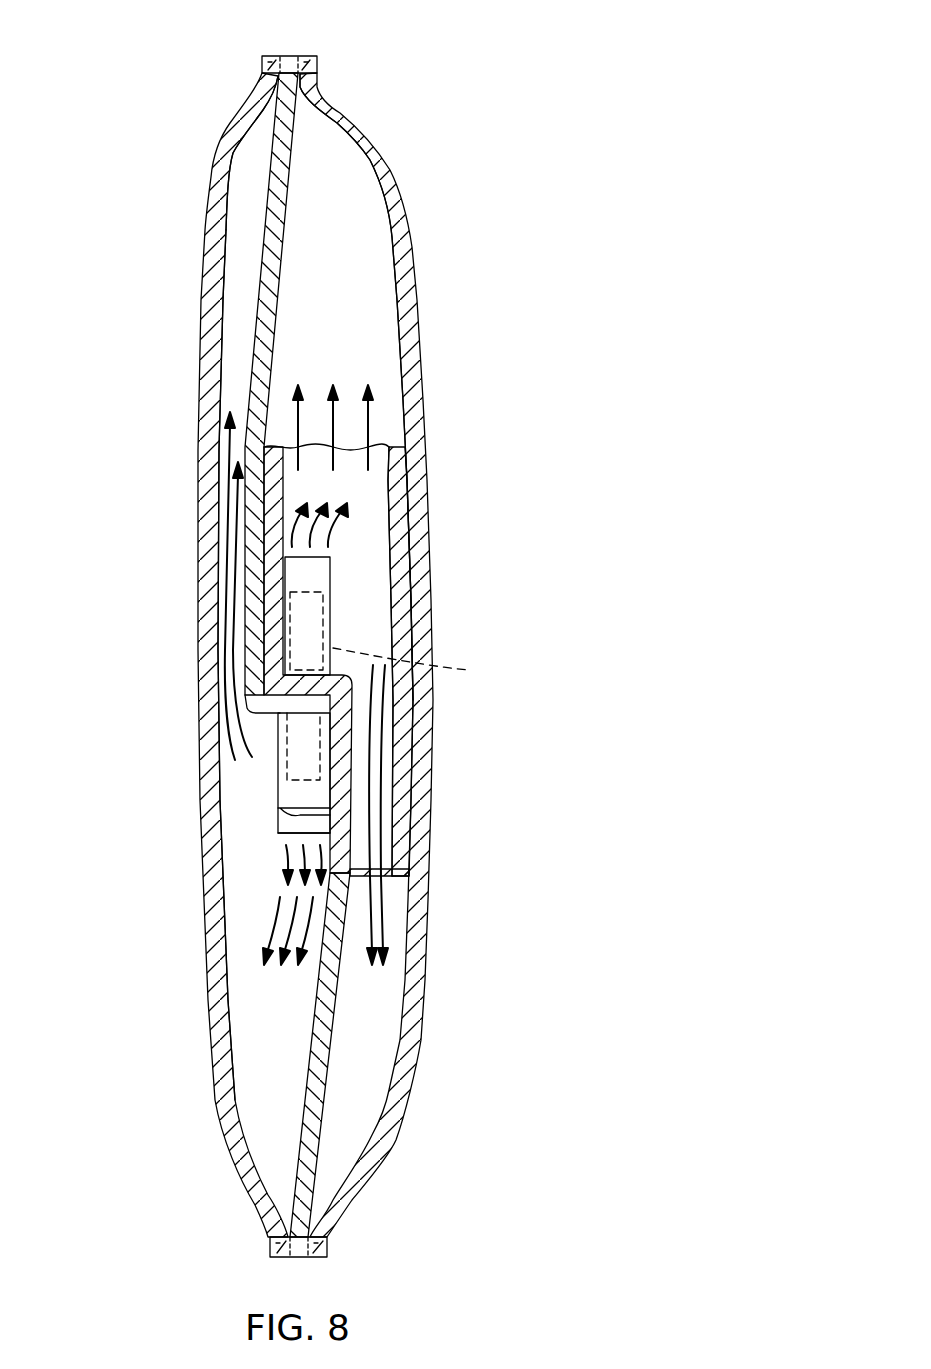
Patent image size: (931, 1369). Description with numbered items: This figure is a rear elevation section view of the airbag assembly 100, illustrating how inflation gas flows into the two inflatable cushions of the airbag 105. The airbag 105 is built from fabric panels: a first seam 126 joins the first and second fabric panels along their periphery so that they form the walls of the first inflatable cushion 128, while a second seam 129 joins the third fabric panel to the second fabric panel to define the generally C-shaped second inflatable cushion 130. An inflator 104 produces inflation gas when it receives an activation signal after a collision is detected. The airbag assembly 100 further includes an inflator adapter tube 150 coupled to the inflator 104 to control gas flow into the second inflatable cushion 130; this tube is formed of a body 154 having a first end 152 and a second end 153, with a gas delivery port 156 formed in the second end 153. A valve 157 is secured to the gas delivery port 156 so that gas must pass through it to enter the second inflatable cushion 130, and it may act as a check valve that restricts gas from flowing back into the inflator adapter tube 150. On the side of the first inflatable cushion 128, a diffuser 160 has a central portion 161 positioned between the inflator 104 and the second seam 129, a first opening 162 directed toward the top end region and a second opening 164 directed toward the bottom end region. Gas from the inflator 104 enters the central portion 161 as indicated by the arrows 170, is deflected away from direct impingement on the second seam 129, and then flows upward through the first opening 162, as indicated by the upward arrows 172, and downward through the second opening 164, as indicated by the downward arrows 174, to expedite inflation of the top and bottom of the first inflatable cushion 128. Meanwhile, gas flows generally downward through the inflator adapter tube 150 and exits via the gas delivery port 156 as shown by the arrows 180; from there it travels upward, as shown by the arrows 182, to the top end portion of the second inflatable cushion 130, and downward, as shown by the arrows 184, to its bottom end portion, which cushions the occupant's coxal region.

The airbag assembly 100 is at (534, 50).
The airbag 105 is at (170, 112).
The first seam 126 is at (318, 61).
The second seam 129 is at (262, 62).
The first inflatable cushion 128 is at (353, 190).
The second inflatable cushion 130 is at (237, 193).
The arrows 182 is at (233, 448).
The outlet flow arrows 172 is at (373, 405).
The first opening 162 is at (380, 443).
The arrows 170 is at (330, 525).
The central portion 161 is at (378, 560).
The diffuser 160 is at (432, 587).
The first end 152 is at (310, 578).
The inflator adapter tube 150 is at (377, 625).
The body 154 is at (307, 643).
The inflator 104 is at (422, 667).
The second end 153 is at (280, 793).
The gas delivery port 156 is at (280, 813).
The valve 157 is at (280, 832).
The arrows 180 is at (285, 862).
The arrows 184 is at (275, 928).
The second opening 164 is at (385, 877).
The return flow 174 is at (377, 927).